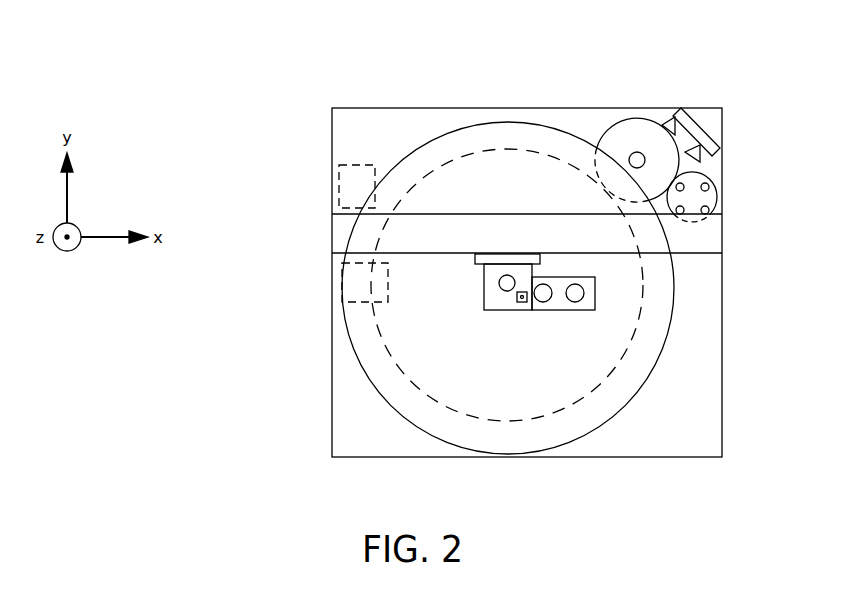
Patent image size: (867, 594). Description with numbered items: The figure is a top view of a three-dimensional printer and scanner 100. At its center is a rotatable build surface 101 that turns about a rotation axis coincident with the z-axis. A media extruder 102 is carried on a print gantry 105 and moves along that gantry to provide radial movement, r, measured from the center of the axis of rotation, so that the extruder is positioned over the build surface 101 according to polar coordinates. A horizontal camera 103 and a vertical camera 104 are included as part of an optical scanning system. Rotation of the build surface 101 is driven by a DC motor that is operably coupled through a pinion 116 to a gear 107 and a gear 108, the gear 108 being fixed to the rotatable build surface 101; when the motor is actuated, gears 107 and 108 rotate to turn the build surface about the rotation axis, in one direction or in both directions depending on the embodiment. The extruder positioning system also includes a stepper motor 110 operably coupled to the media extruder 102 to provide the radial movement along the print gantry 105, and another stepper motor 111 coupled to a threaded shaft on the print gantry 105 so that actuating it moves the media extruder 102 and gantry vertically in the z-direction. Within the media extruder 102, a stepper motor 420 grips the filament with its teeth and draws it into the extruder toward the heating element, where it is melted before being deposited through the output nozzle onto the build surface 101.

The 3D printer and scanner 100 is at (262, 73).
The rotatable build surface 101 is at (410, 367).
The media extruder 102 is at (492, 302).
The horizontal camera 103 is at (700, 135).
The vertical camera 104 is at (567, 332).
The print gantry 105 is at (405, 235).
The gear 107 is at (655, 163).
The gear 108 is at (424, 399).
The motor 110 is at (352, 278).
The motor 111 is at (340, 172).
The pinion 116 is at (700, 203).
The motor 420 is at (522, 302).